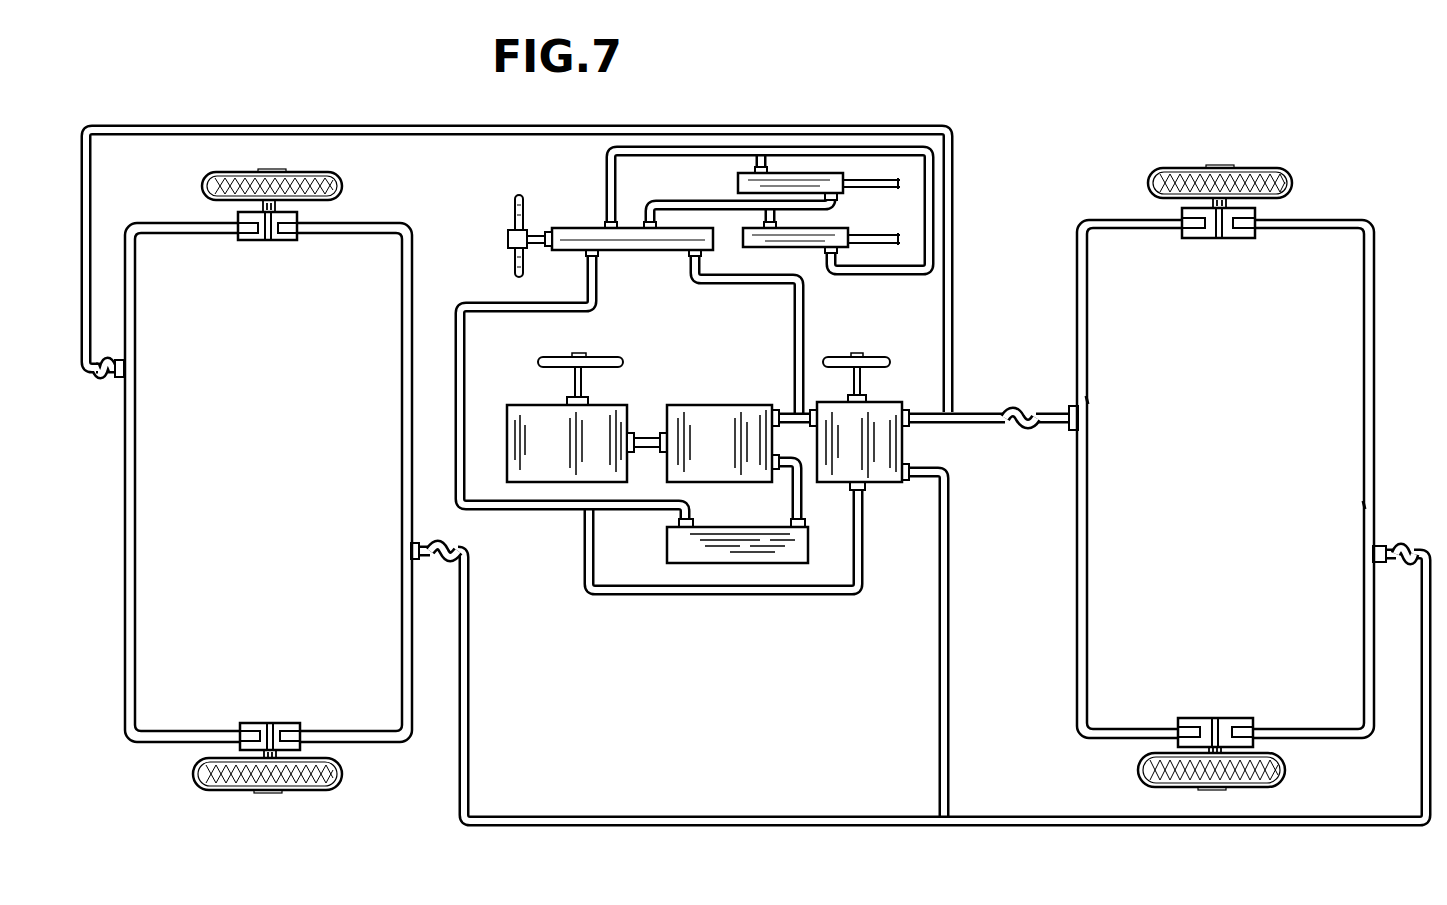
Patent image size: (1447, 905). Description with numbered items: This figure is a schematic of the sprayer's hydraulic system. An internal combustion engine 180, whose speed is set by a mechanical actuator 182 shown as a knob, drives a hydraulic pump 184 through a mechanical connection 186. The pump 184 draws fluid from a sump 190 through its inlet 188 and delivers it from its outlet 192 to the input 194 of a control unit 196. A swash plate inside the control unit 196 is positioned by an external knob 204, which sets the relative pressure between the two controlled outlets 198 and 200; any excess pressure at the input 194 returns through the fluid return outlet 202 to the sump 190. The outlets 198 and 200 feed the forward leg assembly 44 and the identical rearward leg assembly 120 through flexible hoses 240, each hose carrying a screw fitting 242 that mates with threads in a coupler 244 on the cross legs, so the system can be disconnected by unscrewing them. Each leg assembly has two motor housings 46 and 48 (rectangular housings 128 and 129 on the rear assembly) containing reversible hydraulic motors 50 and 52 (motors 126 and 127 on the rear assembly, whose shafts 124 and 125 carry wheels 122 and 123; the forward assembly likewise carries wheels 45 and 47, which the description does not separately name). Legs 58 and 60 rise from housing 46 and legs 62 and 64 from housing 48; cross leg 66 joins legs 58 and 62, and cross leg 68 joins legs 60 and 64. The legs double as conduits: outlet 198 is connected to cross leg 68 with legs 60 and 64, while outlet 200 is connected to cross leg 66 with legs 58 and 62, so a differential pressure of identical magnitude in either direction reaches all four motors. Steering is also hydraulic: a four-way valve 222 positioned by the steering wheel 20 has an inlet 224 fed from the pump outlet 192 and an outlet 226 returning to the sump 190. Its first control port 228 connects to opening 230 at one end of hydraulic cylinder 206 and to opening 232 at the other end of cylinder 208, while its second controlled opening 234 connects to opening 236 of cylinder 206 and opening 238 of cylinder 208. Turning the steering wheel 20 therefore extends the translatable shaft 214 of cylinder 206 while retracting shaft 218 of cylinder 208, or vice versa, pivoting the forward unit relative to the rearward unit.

The steering wheel 20 is at (516, 215).
The leg assembly 44 is at (1362, 337).
The wheel 45 is at (1150, 782).
The motor housing 46 is at (1233, 718).
The wheel 47 is at (1195, 172).
The motor housing 48 is at (1243, 240).
The hydraulic motor 50 is at (1207, 722).
The hydraulic motor 52 is at (1210, 240).
The leg 58 is at (388, 745).
The leg 60 is at (186, 732).
The leg 62 is at (338, 236).
The leg 64 is at (166, 224).
The cross leg 66 is at (400, 372).
The cross leg 68 is at (136, 452).
The leg assembly 120 is at (140, 552).
The wheel 122 is at (235, 783).
The wheel 123 is at (318, 176).
The shaft 124 is at (242, 748).
The shaft 125 is at (288, 206).
The hydraulic motor 126 is at (290, 722).
The hydraulic motor 127 is at (250, 243).
The rectangular motor housing 128 is at (262, 723).
The rectangular motor housing 129 is at (272, 242).
The internal combustion engine 180 is at (530, 422).
The mechanical actuator 182 is at (593, 360).
The hydraulic pump 184 is at (705, 425).
The mechanical connection 186 is at (645, 432).
The inlet 188 is at (786, 468).
The sump 190 is at (742, 548).
The outlet 192 is at (786, 410).
The input 194 is at (810, 412).
The control unit 196 is at (872, 455).
The controlled outlet 198 is at (915, 422).
The controlled outlet 200 is at (910, 470).
The fluid return outlet 202 is at (851, 490).
The knob 204 is at (838, 362).
The hydraulic cylinder 206 is at (797, 170).
The hydraulic cylinder 208 is at (812, 248).
The translatable shaft 214 is at (900, 183).
The translatable shaft 218 is at (902, 243).
The four-way valve 222 is at (640, 245).
The inlet 224 is at (703, 252).
The outlet 226 is at (582, 255).
The first control port 228 is at (606, 224).
The opening 230 is at (757, 172).
The opening 232 is at (838, 250).
The second controlled opening 234 is at (650, 222).
The opening 236 is at (840, 197).
The opening 238 is at (773, 228).
The flexible hose 240 is at (115, 362).
The screw fitting 242 is at (1072, 425).
The coupler 244 is at (1088, 400).